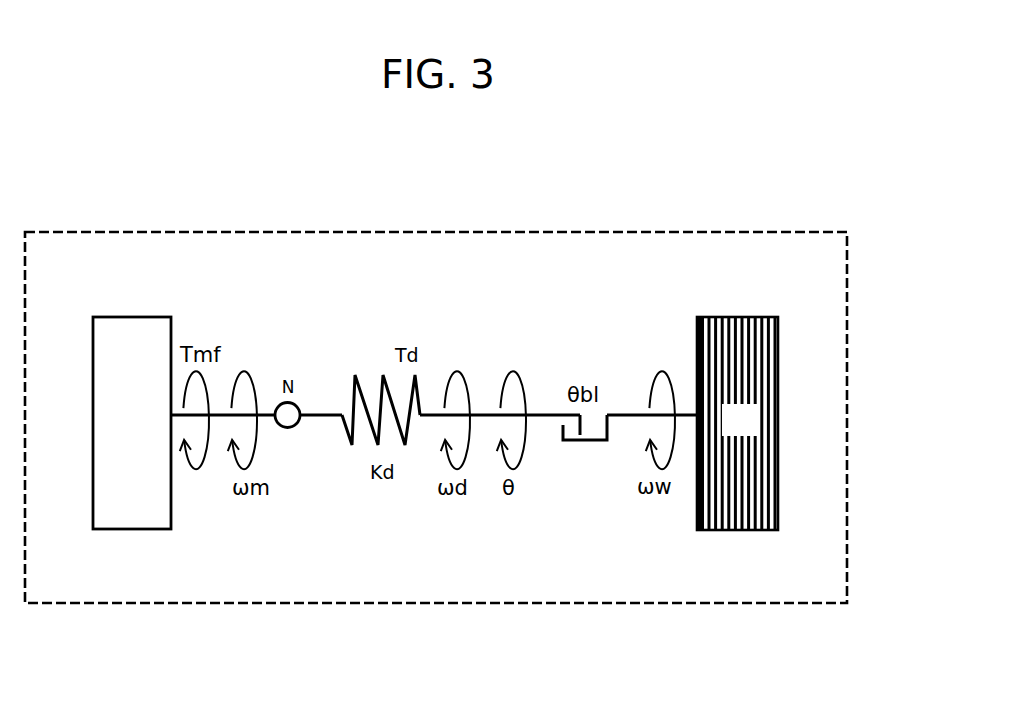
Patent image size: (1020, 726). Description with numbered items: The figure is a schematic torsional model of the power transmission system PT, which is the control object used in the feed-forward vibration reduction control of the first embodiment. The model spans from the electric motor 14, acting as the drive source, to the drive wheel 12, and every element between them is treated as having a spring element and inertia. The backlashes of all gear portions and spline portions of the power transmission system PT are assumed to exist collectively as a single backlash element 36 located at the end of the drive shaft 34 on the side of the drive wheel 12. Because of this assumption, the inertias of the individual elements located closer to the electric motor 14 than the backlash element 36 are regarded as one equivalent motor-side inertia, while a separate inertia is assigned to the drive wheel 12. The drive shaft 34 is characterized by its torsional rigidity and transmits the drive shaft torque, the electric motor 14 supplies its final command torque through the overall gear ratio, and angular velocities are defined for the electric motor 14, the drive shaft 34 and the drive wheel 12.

The drive wheel 12 is at (750, 317).
The electric motor 14 is at (143, 317).
The drive shaft 34 is at (345, 433).
The backlash element 36 is at (587, 443).
The power transmission system PT is at (742, 232).